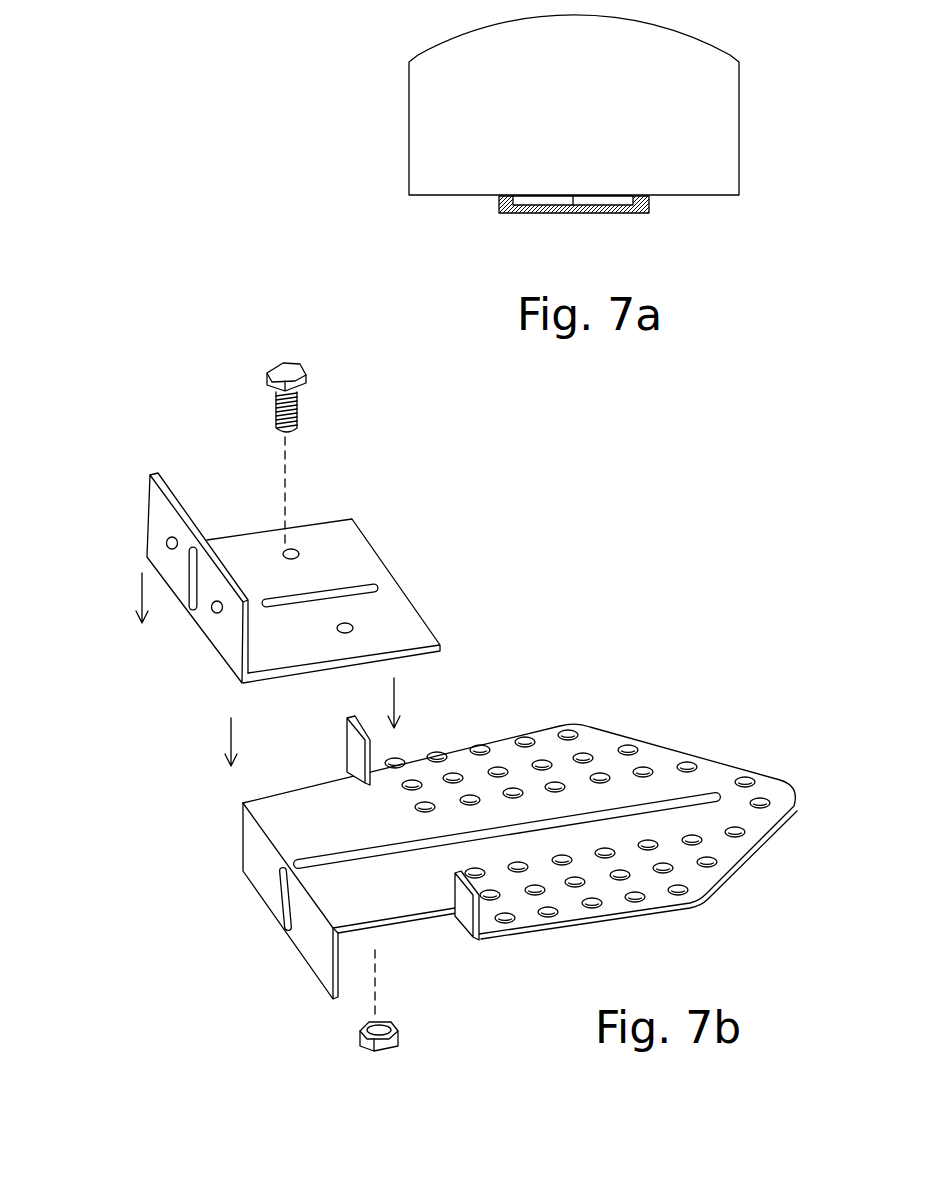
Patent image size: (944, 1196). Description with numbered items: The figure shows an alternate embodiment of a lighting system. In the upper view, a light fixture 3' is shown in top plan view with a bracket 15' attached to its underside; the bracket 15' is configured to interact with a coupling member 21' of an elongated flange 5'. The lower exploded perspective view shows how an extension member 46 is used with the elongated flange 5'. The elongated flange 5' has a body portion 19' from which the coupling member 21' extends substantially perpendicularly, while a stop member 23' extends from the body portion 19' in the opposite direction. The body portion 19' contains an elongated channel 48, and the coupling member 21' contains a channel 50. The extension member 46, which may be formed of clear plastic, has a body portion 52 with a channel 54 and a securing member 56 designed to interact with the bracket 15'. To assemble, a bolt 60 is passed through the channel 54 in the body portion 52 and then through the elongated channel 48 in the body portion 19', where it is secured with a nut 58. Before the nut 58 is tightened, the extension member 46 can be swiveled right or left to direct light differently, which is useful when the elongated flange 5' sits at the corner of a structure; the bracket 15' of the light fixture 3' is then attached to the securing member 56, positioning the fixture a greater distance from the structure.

In FIG. 7a, the light fixture 3' is at (615, 105).
In FIG. 7a, the bracket 15' is at (624, 238).
In FIG. 7b, the elongated flange 5' is at (465, 836).
In FIG. 7b, the body portion 19' is at (520, 793).
In FIG. 7b, the coupling member 21' is at (270, 909).
In FIG. 7b, the stop member 23' is at (439, 870).
In FIG. 7b, the extension member 46 is at (195, 466).
In FIG. 7b, the elongated channel 48 is at (692, 800).
In FIG. 7b, the channel 50 is at (282, 913).
In FIG. 7b, the body portion 52 is at (404, 594).
In FIG. 7b, the channel 54 is at (352, 588).
In FIG. 7b, the securing member 56 is at (200, 617).
In FIG. 7b, the nut 58 is at (390, 1050).
In FIG. 7b, the bolt 60 is at (282, 368).